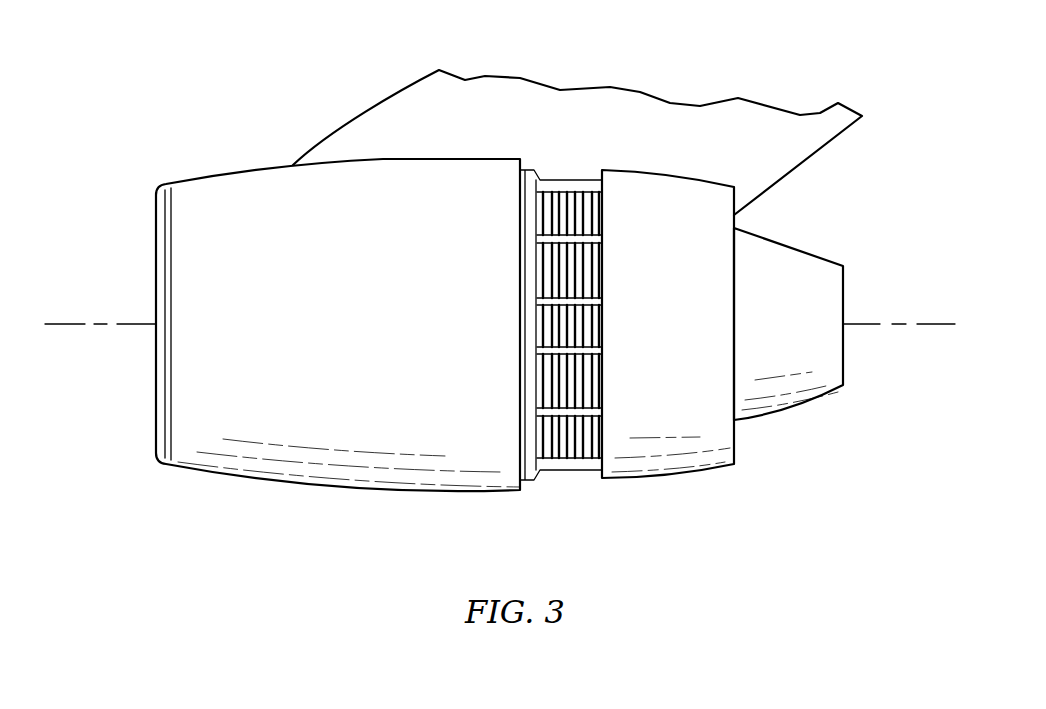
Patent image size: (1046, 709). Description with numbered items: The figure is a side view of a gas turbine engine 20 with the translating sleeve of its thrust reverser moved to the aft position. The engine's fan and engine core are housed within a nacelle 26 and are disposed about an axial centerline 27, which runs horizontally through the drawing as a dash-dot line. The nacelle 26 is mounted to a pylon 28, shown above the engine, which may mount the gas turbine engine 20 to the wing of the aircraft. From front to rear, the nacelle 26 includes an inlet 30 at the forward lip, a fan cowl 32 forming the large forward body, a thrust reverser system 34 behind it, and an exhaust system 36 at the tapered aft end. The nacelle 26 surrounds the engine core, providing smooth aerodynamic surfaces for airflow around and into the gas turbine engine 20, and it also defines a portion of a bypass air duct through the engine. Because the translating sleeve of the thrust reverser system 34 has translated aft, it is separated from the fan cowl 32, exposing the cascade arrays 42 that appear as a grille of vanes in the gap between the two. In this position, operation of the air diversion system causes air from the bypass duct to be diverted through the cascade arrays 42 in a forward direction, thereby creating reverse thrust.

The gas turbine engine 20 is at (860, 196).
The nacelle 26 is at (290, 358).
The axial centerline 27 is at (950, 326).
The pylon 28 is at (646, 115).
The inlet 30 is at (148, 428).
The fan cowl 32 is at (268, 231).
The thrust reverser system 34 is at (676, 480).
The exhaust system 36 is at (790, 421).
The cascade arrays 42 is at (552, 315).